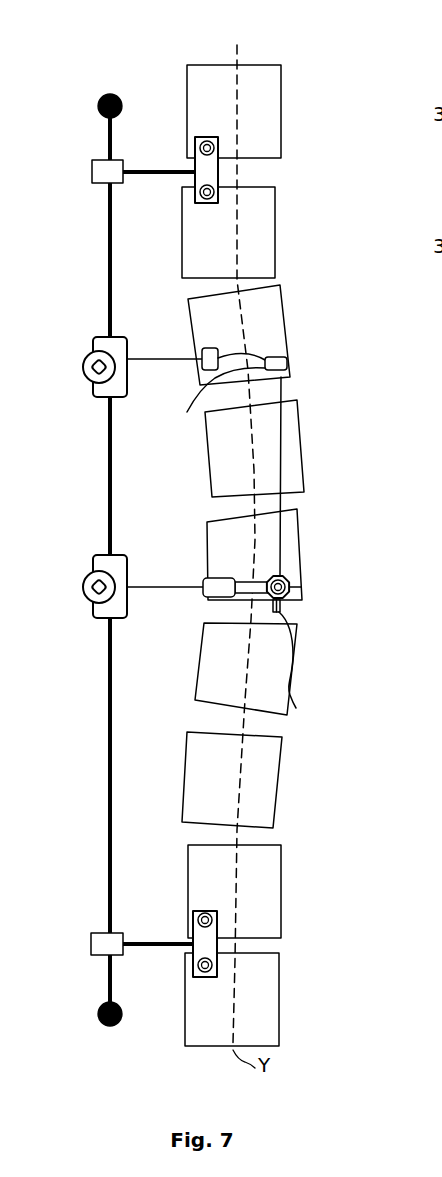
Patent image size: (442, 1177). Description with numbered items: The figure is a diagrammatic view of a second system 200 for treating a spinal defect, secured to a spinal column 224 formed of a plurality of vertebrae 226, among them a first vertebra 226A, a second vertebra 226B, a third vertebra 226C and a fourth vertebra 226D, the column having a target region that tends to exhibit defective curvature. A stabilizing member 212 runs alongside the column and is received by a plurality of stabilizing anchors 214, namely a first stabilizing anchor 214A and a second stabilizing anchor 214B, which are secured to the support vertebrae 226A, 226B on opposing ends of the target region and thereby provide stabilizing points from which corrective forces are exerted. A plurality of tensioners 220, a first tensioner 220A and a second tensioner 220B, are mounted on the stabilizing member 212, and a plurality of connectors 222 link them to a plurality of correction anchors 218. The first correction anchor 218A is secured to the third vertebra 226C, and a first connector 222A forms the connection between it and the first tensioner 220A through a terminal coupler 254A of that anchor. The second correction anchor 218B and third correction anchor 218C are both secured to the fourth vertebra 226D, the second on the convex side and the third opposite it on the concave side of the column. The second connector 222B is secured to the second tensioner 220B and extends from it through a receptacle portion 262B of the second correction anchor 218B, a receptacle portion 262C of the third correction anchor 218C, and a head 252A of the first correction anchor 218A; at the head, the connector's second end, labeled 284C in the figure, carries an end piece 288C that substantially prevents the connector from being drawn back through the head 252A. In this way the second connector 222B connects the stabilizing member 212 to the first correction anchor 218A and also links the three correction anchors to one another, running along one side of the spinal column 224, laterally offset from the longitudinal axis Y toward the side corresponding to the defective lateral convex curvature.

The second system 200 is at (95, 68).
The spinal column 224 is at (287, 527).
The stabilizing anchors 214 is at (121, 152).
The second stabilizing anchor 214B is at (100, 175).
The first stabilizing anchor 214A is at (100, 943).
The stabilizing member 212 is at (108, 248).
The second vertebra 226B is at (260, 228).
The fourth vertebra 226D is at (272, 337).
The vertebrae 226 is at (305, 432).
The third vertebra 226C is at (293, 530).
The first vertebra 226A is at (273, 891).
The second correction anchor 218B is at (213, 348).
The third correction anchor 218C is at (287, 362).
The correction anchors 218 is at (303, 574).
The first correction anchor 218A is at (283, 606).
The second connector 222B is at (158, 359).
The connectors 222 is at (166, 572).
The first connector 222A is at (167, 592).
The receptacle portion 262B is at (203, 367).
The receptacle portion 262C is at (201, 404).
The tensioners 220 is at (80, 371).
The second tensioner 220B is at (100, 393).
The first tensioner 220A is at (100, 607).
The terminal coupler 254A is at (204, 582).
The head 252A is at (301, 587).
The tab 284C is at (286, 617).
The cable 288C is at (314, 668).